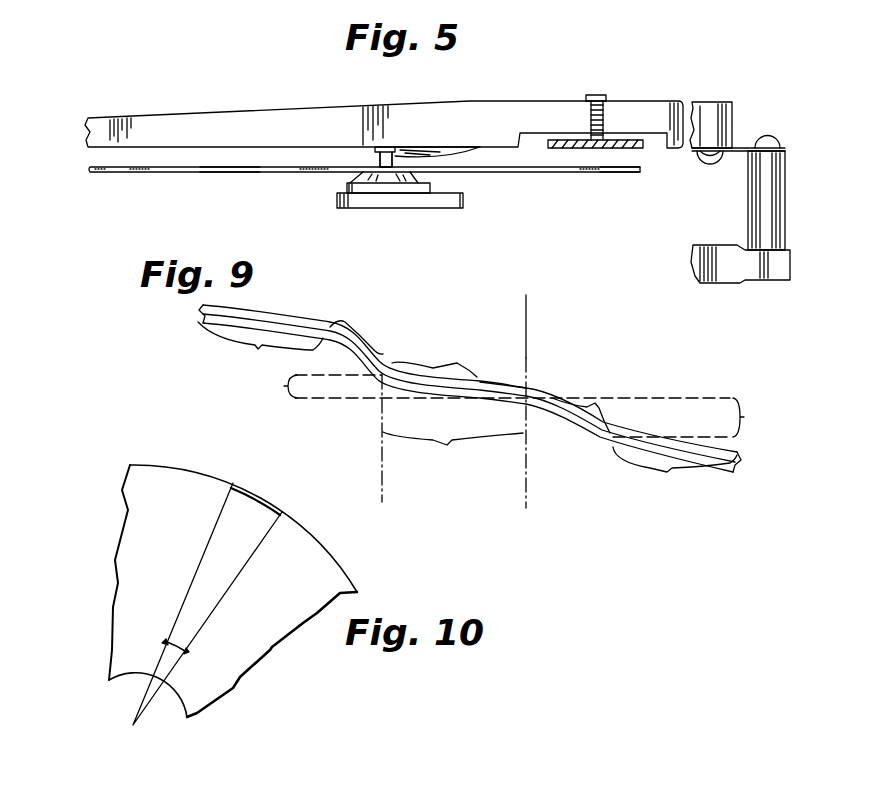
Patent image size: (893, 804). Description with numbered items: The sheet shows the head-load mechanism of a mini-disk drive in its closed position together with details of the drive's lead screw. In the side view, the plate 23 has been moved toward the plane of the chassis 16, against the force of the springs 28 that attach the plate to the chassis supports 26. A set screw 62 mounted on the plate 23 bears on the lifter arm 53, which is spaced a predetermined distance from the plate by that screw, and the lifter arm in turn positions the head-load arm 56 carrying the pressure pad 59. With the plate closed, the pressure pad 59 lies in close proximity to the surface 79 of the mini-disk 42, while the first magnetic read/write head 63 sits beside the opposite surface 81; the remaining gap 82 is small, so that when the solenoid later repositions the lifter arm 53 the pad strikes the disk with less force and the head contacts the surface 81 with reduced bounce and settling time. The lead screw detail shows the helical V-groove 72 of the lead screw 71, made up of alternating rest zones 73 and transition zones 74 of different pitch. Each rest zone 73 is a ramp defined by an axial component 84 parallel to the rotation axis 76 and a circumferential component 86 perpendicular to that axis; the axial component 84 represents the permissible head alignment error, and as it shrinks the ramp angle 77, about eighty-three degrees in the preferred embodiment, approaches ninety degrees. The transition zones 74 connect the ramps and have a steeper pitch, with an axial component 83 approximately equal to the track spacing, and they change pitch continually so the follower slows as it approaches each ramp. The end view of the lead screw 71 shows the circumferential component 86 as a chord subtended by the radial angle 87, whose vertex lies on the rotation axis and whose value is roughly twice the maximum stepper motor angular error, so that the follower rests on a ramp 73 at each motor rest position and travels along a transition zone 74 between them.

In FIG. 5, the chassis 16 is at (700, 248).
In FIG. 5, the plate 23 is at (540, 112).
In FIG. 5, the chassis supports 26 is at (762, 205).
In FIG. 5, the springs 28 is at (742, 147).
In FIG. 5, the mini-disk 42 is at (651, 170).
In FIG. 5, the lifter arm 53 is at (586, 150).
In FIG. 5, the head-load arm 56 is at (445, 153).
In FIG. 5, the pressure pad 59 is at (397, 162).
In FIG. 5, the set screw 62 is at (606, 97).
In FIG. 5, the first magnetic read/write head 63 is at (347, 195).
In FIG. 10, the lead screw 71 is at (335, 578).
In FIG. 9, the helical V-groove 72 is at (742, 465).
In FIG. 9, the rest zones 73 is at (467, 409).
In FIG. 9, the transition zones 74 is at (473, 377).
In FIG. 9, the rotation axis 76 is at (529, 312).
In FIG. 9, the angle of the ramp 77 is at (525, 358).
In FIG. 5, the surface of the mini-disk 79 is at (90, 168).
In FIG. 5, the surface of the mini-disk 81 is at (213, 173).
In FIG. 5, the gap 82 is at (375, 160).
In FIG. 9, the axial component of the transition zone 83 is at (694, 420).
In FIG. 9, the axial component of the ramp 84 is at (487, 389).
In FIG. 9, the circumferential component of the ramp 86 is at (452, 438).
In FIG. 10, the circumferential component of the ramp 86 is at (258, 503).
In FIG. 10, the radial angle 87 is at (187, 648).